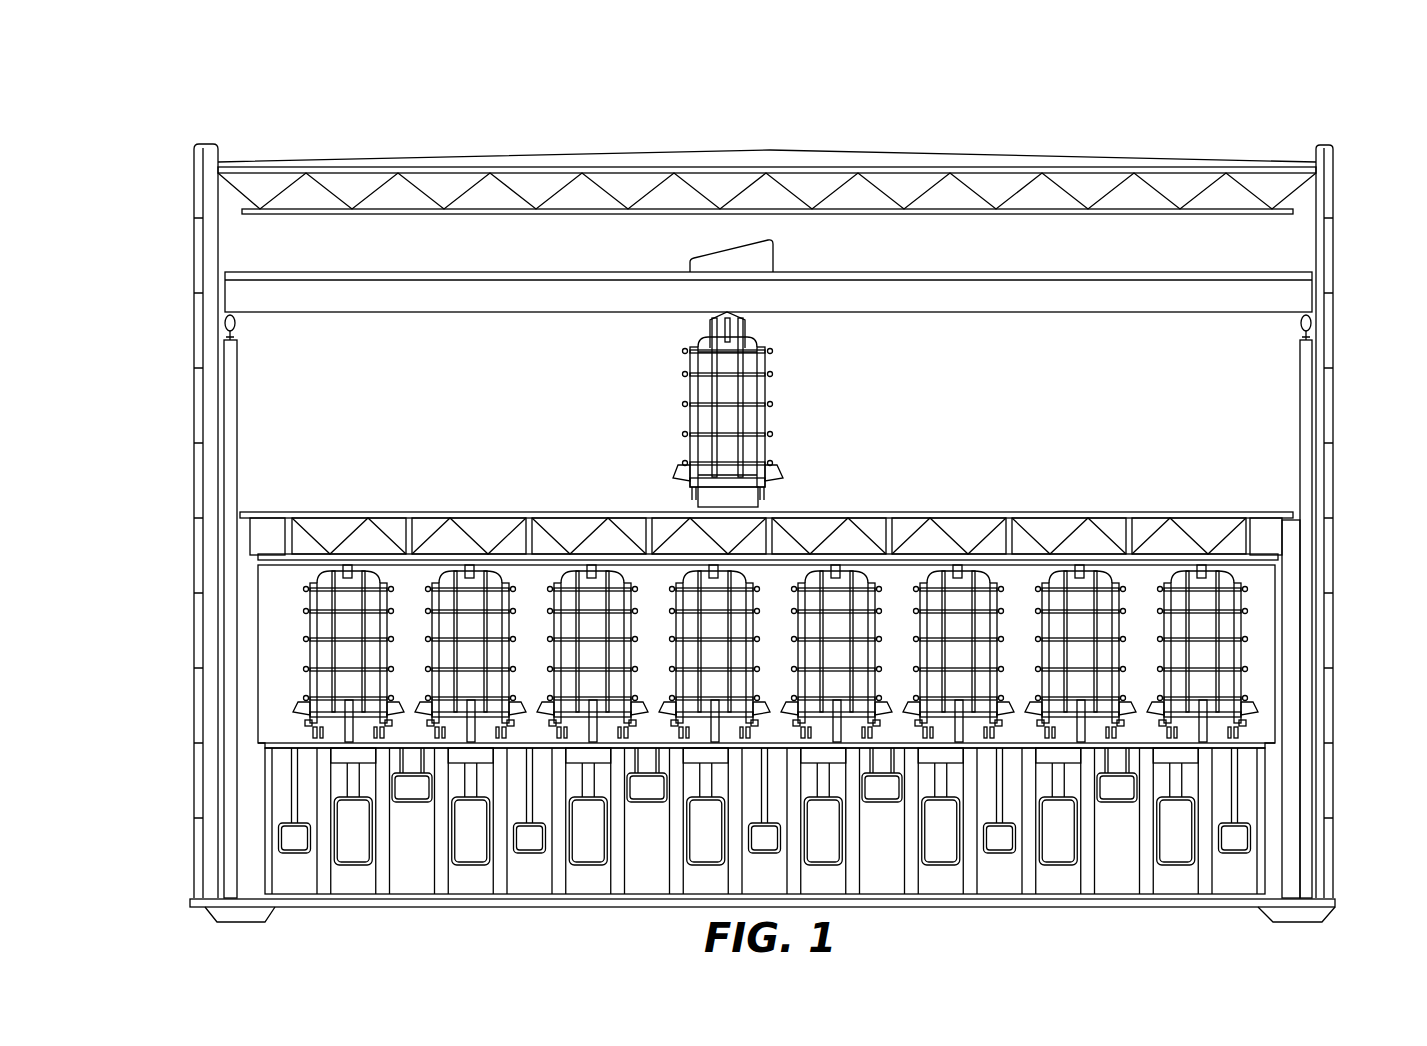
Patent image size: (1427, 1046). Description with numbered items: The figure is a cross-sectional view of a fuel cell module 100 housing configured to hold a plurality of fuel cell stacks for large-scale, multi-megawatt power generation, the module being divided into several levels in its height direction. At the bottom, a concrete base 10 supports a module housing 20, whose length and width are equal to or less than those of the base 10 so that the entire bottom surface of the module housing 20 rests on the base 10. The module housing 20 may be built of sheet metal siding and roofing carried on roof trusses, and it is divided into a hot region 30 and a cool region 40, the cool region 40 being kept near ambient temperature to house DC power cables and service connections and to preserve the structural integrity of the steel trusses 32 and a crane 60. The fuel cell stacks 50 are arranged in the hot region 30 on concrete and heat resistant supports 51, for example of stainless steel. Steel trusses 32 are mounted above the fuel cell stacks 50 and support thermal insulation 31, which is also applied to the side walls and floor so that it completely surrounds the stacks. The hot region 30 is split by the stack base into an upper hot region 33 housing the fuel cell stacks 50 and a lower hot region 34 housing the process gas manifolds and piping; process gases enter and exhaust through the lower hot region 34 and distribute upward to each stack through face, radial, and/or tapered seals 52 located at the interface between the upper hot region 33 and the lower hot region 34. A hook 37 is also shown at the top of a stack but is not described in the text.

The fuel cell module 100 is at (367, 98).
The base 10 is at (1210, 899).
The module housing 20 is at (1330, 212).
The hot region 30 is at (1350, 583).
The thermal insulation 31 is at (1255, 565).
The steel trusses 32 is at (1135, 513).
The upper hot region 33 is at (282, 620).
The lower hot region 34 is at (278, 858).
The hook 37 is at (340, 567).
The cool region 40 is at (1350, 257).
The fuel cell stacks 50 is at (672, 421).
The heat resistant supports 51 is at (343, 738).
The seals 52 is at (290, 743).
The crane 60 is at (723, 262).